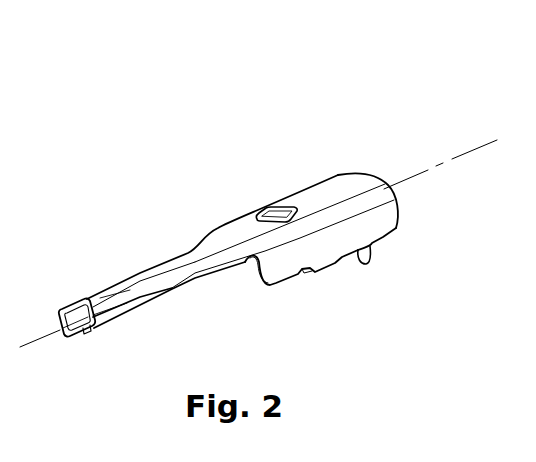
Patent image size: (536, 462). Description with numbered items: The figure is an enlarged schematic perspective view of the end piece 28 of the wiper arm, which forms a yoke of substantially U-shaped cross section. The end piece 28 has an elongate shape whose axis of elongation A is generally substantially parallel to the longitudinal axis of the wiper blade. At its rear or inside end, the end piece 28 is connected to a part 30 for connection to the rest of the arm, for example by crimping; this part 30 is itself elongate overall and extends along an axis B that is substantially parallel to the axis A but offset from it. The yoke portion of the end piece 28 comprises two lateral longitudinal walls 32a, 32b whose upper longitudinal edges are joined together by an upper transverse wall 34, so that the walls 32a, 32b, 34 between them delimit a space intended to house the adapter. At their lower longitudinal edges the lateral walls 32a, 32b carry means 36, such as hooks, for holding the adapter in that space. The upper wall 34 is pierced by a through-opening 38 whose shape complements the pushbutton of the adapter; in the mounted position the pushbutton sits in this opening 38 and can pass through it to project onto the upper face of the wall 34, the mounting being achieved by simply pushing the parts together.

The end piece 28 is at (307, 112).
The part for connection 30 is at (138, 292).
The lateral longitudinal wall 32a is at (393, 212).
The lateral longitudinal wall 32b is at (295, 193).
The upper transverse wall 34 is at (334, 195).
The means for holding the adapter 36 is at (318, 270).
The through-opening 38 is at (265, 208).
The axis of elongation A is at (460, 155).
The axis B is at (42, 338).